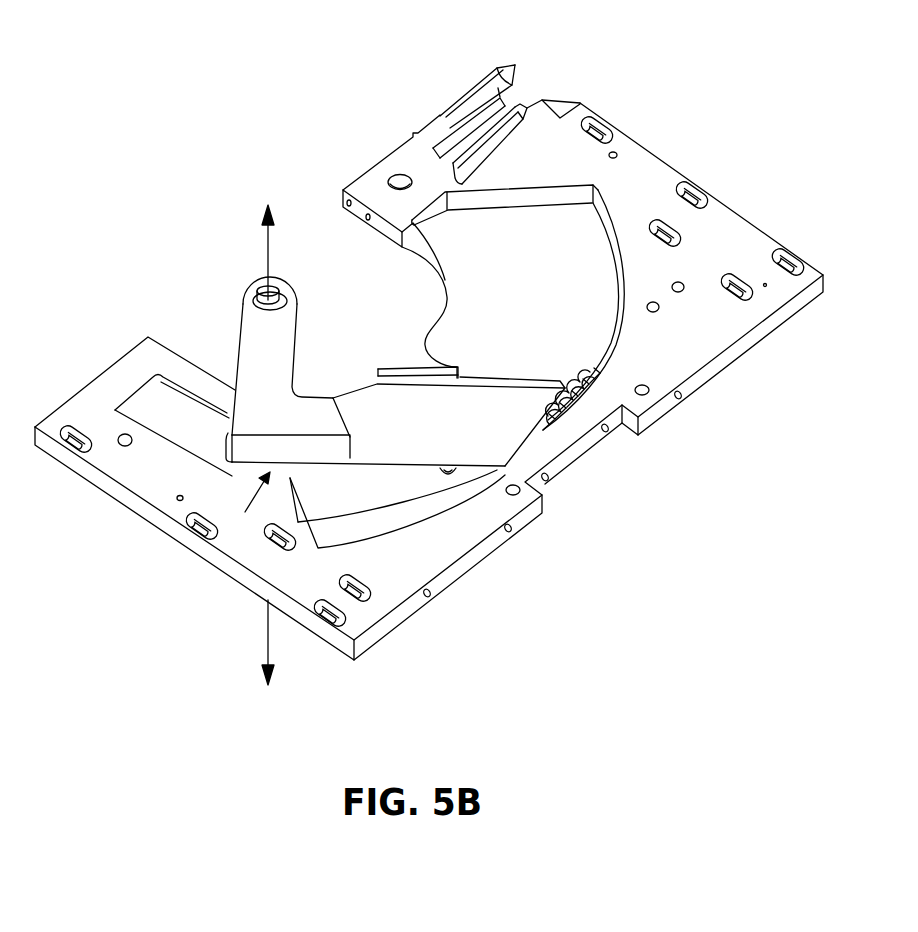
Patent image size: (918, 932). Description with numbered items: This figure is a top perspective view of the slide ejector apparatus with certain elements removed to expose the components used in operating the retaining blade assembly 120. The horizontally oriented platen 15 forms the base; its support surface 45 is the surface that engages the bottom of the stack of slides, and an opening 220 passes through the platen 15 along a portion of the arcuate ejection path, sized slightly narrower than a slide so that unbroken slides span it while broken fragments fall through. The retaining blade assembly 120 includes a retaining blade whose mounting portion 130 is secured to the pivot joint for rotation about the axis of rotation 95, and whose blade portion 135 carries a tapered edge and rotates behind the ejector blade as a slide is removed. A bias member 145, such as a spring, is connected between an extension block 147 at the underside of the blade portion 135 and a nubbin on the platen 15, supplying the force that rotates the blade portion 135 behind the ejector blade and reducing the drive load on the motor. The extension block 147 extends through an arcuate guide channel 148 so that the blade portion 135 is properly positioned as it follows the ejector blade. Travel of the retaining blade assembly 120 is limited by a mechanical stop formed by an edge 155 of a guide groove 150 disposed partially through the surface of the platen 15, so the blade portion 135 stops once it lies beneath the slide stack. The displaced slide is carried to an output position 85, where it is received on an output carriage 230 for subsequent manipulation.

The platen 15 is at (714, 192).
The support surface 45 is at (709, 325).
The output position 85 is at (457, 123).
The axis of rotation 95 is at (273, 267).
The retaining blade assembly 120 is at (250, 578).
The mounting portion 130 is at (278, 414).
The blade portion 135 is at (457, 437).
The bias member 145 is at (583, 383).
The extension block 147 is at (455, 477).
The arcuate guide channel 148 is at (393, 500).
The guide groove 150 is at (192, 433).
The edge 155 is at (370, 368).
The opening 220 is at (540, 270).
The output carriage 230 is at (473, 78).